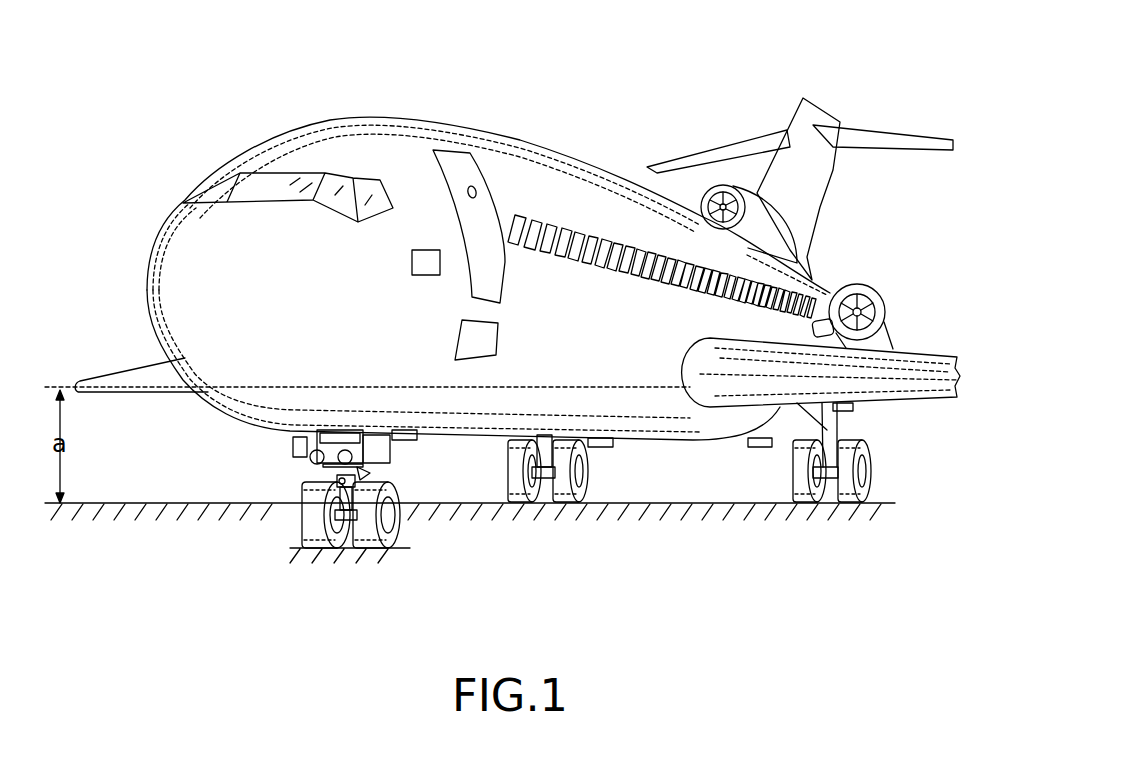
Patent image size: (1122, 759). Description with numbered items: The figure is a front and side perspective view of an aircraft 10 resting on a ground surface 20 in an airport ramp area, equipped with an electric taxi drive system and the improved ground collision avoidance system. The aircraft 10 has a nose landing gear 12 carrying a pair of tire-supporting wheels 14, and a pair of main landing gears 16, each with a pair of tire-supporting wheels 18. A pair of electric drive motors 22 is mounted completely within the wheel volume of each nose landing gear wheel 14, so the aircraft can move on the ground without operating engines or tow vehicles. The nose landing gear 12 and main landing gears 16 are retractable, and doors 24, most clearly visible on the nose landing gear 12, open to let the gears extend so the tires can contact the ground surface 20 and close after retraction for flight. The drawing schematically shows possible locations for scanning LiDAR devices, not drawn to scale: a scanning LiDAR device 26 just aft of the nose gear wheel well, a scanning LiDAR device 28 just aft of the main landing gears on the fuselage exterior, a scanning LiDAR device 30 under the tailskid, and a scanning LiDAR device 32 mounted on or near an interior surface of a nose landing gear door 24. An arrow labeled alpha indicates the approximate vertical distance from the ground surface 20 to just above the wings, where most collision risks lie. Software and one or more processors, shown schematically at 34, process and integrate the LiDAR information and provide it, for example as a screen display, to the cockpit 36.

The aircraft 10 is at (372, 100).
The nose landing gear 12 is at (240, 530).
The tire-supporting wheels 14 is at (370, 560).
The main landing gears 16 is at (492, 454).
The tire-supporting wheels 18 is at (567, 515).
The ground surface 20 is at (703, 507).
The electric drive motors 22 is at (313, 522).
The doors 24 is at (293, 462).
The scanning LiDAR device 26 is at (405, 430).
The scanning LiDAR device 28 is at (598, 448).
The scanning LiDAR device 30 is at (757, 448).
The scanning LiDAR device 32 is at (293, 448).
The software and onboard processors 34 is at (428, 258).
The cockpit 36 is at (227, 187).